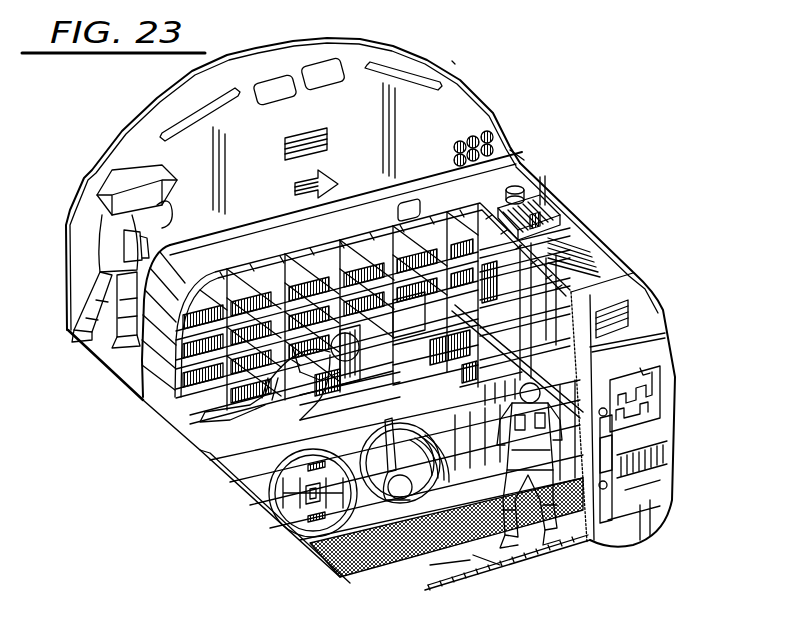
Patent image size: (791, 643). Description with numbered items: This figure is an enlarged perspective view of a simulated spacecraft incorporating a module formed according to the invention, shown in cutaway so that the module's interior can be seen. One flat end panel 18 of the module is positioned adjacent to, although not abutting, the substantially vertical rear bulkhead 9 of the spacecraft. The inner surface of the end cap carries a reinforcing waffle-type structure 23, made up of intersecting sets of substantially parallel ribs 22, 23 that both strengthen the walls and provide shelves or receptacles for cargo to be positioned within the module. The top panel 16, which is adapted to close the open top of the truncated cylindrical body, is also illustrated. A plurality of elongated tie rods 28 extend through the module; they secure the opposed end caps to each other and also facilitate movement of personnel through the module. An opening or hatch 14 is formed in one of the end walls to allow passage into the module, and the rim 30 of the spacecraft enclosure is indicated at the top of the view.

The rear bulkhead 9 is at (460, 106).
The rim of module 30 is at (446, 65).
The ribs in a first set 22 is at (219, 355).
The top panel 16 is at (606, 269).
The exterior skin 18 is at (520, 148).
The ribs in a second set 23 is at (462, 225).
The tie rods 28 is at (553, 386).
The hatch 14 is at (413, 510).